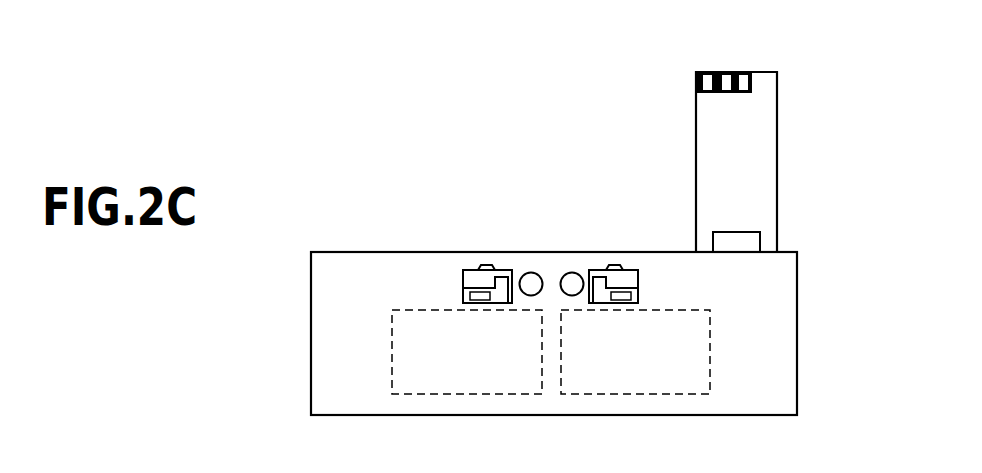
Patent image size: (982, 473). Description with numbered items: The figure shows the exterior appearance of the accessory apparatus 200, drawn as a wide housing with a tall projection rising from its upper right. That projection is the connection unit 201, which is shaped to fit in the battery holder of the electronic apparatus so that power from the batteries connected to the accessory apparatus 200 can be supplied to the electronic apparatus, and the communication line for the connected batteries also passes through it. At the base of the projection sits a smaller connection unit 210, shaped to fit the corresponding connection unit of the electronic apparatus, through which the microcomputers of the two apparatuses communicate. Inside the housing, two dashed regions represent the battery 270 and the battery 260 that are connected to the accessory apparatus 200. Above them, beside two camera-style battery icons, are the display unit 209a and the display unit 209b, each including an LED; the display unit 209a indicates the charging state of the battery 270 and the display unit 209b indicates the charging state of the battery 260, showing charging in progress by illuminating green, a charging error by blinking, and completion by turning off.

The accessory apparatus 200 is at (370, 252).
The connection unit 201 is at (760, 68).
The connection unit 210 is at (740, 232).
The display unit 209a is at (530, 272).
The display unit 209b is at (575, 272).
The battery 270 is at (467, 352).
The battery 260 is at (635, 352).